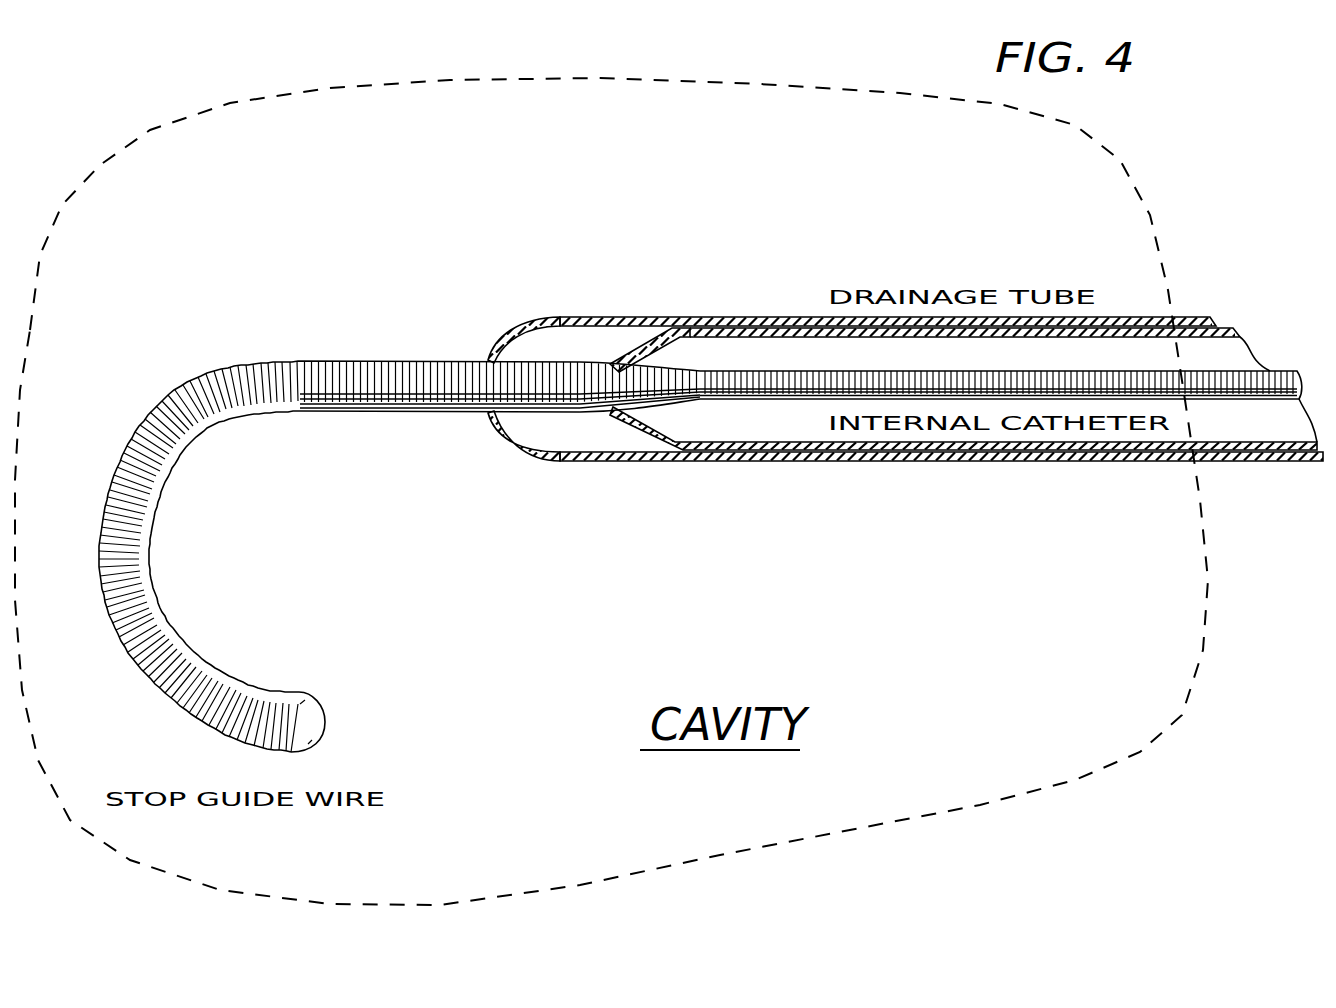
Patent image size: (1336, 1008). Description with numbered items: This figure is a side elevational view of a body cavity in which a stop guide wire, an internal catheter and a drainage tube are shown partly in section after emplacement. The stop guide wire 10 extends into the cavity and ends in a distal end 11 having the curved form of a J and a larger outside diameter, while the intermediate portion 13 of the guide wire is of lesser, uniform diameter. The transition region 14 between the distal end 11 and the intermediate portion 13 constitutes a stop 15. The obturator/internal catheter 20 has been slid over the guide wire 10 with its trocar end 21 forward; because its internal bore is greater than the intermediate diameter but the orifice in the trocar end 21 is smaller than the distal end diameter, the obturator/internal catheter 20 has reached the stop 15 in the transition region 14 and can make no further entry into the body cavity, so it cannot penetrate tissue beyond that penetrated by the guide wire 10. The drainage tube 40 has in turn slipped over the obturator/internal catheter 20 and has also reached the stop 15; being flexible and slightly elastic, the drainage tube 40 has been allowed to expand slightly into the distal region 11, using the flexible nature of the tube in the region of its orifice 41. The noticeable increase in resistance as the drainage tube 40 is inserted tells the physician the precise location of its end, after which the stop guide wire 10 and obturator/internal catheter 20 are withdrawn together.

The stop guide wire 10 is at (735, 371).
The distal end 11 is at (123, 510).
The intermediate portion 13 is at (765, 370).
The transition region 14 is at (557, 322).
The stop 15 is at (620, 462).
The obturator/internal catheter 20 is at (639, 339).
The trocar end 21 is at (592, 368).
The drainage tube 40 is at (655, 317).
The orifice 41 is at (487, 358).